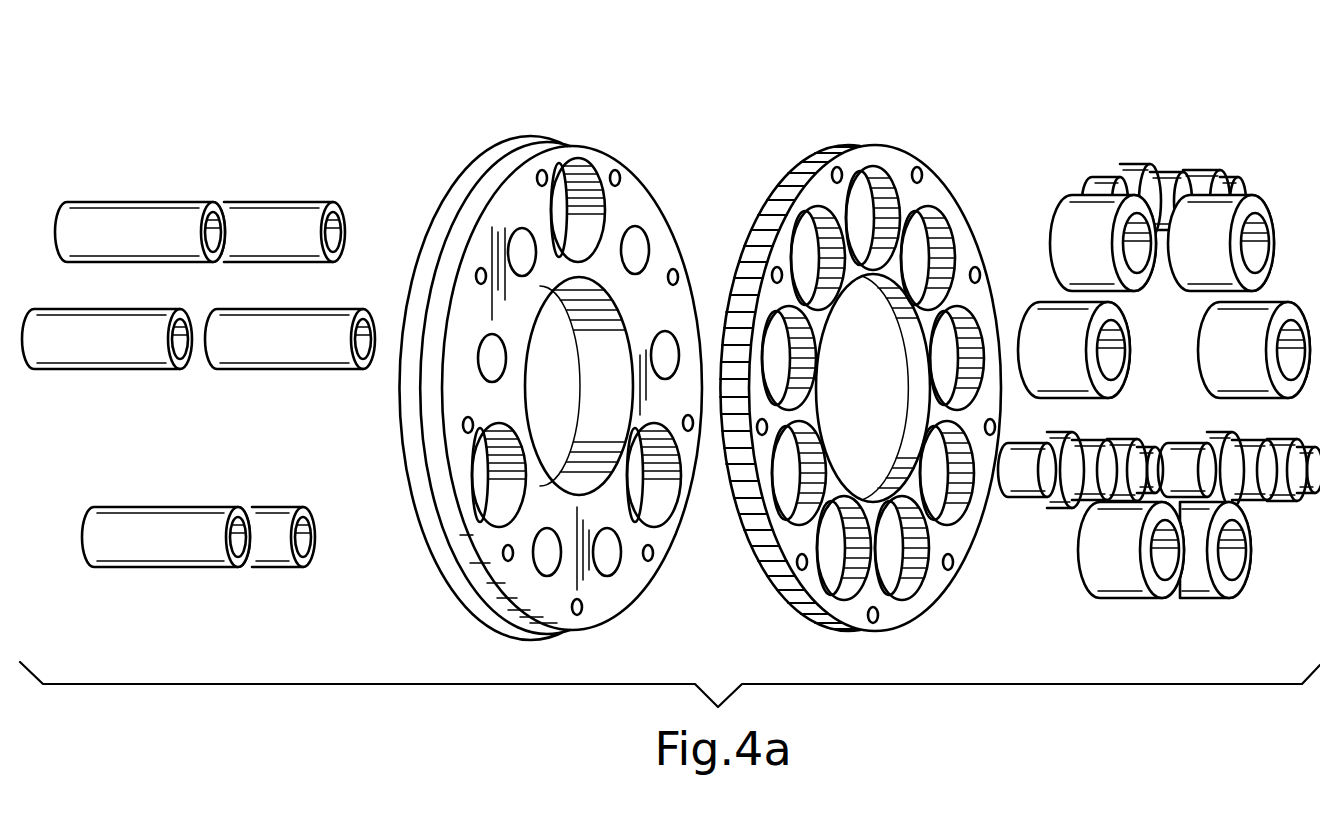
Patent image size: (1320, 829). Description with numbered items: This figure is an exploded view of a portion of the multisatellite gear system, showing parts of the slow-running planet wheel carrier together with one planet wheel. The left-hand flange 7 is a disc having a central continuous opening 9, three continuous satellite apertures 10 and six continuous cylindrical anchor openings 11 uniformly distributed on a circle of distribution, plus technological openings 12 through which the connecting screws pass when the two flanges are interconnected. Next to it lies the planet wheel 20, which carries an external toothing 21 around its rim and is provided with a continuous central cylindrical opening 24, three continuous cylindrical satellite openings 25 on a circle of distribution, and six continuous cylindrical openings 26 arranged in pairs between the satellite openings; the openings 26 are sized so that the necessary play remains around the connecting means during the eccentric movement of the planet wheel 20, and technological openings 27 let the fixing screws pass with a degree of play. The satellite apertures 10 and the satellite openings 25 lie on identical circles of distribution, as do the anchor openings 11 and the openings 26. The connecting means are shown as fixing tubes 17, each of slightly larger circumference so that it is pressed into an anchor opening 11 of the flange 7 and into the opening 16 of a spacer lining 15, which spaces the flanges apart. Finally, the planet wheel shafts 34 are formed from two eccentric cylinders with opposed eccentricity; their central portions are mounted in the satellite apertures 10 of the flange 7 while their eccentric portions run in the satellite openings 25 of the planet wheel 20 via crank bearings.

The left-hand flange 7 is at (467, 152).
The central continuous opening 9 is at (637, 247).
The satellite aperture 10 is at (587, 233).
The anchor opening 11 is at (608, 385).
The technological opening 12 is at (481, 274).
The spacer lining 15 is at (1043, 295).
The opening of the spacer lining 16 is at (1255, 268).
The fixing tube 17 is at (275, 230).
The planet wheel 20 is at (790, 158).
The external toothing 21 is at (750, 292).
The central cylindrical opening 24 is at (920, 353).
The satellite opening 25 is at (887, 217).
The continuous opening 26 is at (947, 252).
The technological opening 27 is at (772, 233).
The planet wheel shaft 34 is at (1112, 168).